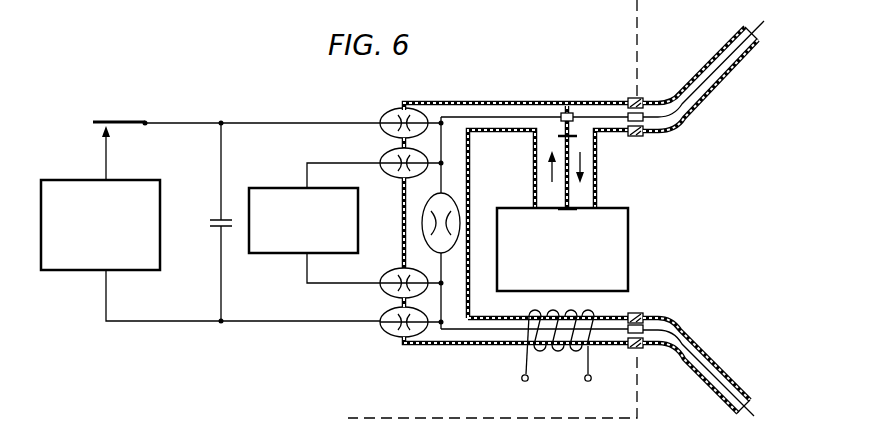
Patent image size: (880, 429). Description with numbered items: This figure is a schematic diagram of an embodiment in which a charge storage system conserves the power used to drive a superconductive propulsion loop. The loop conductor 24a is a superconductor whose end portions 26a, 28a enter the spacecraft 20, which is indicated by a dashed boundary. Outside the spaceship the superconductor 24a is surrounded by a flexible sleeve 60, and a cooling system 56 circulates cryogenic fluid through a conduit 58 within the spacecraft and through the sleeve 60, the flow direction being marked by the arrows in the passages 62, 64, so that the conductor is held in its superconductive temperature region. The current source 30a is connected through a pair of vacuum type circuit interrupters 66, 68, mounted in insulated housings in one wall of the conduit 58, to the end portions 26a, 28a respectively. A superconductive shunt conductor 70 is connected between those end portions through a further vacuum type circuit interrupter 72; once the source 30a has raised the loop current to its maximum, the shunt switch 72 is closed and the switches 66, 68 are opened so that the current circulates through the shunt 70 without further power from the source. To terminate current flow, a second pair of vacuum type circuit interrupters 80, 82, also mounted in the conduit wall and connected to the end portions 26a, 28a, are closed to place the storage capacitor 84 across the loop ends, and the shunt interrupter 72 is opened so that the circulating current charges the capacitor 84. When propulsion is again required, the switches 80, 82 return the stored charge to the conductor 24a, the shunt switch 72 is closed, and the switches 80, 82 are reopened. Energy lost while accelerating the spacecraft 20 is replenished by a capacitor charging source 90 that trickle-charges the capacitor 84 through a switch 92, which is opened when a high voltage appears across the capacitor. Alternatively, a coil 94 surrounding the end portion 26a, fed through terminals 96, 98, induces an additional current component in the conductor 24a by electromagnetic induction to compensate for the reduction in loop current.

The spacecraft 20 is at (638, 58).
The loop conductor 24a is at (728, 59).
The end portion of conductor 26a is at (510, 345).
The end portion of conductor 28a is at (462, 100).
The current source 30a is at (285, 188).
The cooling system 56 is at (621, 252).
The conduit 58 is at (472, 286).
The flexible sleeve 60 is at (706, 98).
The coolant inlet passage 62 is at (535, 188).
The coolant outlet passage 64 is at (590, 187).
The vacuum type circuit interrupter 66 is at (395, 270).
The vacuum type circuit interrupter 68 is at (390, 153).
The shunt conductor 70 is at (444, 284).
The shunt circuit interrupter 72 is at (424, 221).
The vacuum type circuit interrupter 80 is at (385, 312).
The vacuum type circuit interrupter 82 is at (392, 114).
The storage capacitor 84 is at (212, 221).
The capacitor charging source 90 is at (80, 180).
The switch 92 is at (140, 121).
The coil 94 is at (561, 348).
The terminal 96 is at (524, 382).
The terminal 98 is at (588, 382).